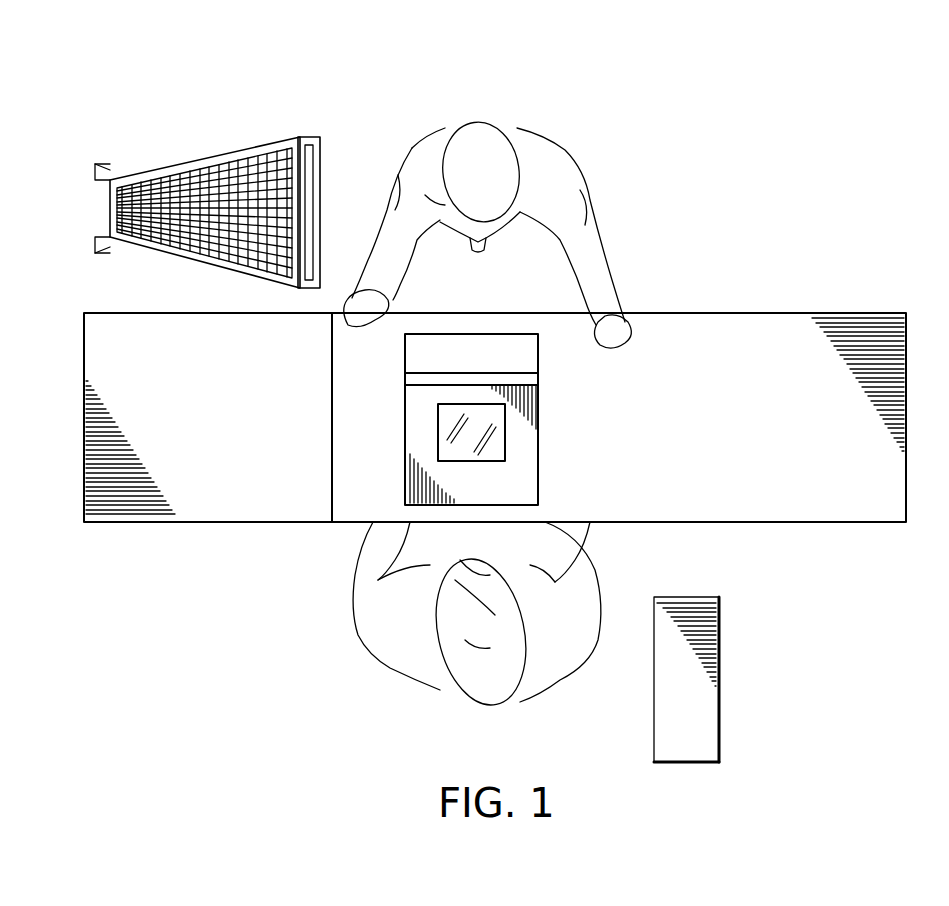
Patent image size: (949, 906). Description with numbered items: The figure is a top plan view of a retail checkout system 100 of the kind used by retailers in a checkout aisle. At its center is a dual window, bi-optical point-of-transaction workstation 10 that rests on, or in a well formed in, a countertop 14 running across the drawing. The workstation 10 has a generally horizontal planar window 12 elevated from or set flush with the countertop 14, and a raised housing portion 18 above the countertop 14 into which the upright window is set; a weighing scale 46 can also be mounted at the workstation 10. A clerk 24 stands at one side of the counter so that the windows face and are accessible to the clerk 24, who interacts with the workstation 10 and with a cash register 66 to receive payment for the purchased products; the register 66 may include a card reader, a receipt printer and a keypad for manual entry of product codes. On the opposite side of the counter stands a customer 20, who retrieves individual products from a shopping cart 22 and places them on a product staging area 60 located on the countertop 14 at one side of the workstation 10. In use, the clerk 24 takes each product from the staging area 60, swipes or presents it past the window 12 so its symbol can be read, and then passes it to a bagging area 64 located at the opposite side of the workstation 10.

The retail checkout system 100 is at (645, 115).
The bi-optical point-of-transaction workstation 10 is at (599, 396).
The horizontal planar window 12 is at (483, 452).
The countertop 14 is at (873, 325).
The raised housing portion 18 is at (470, 334).
The customer 20 is at (478, 120).
The shopping cart 22 is at (203, 157).
The clerk 24 is at (418, 685).
The weighing scale 46 is at (510, 461).
The product staging area 60 is at (690, 335).
The bagging area 64 is at (115, 530).
The cash register 66 is at (687, 595).